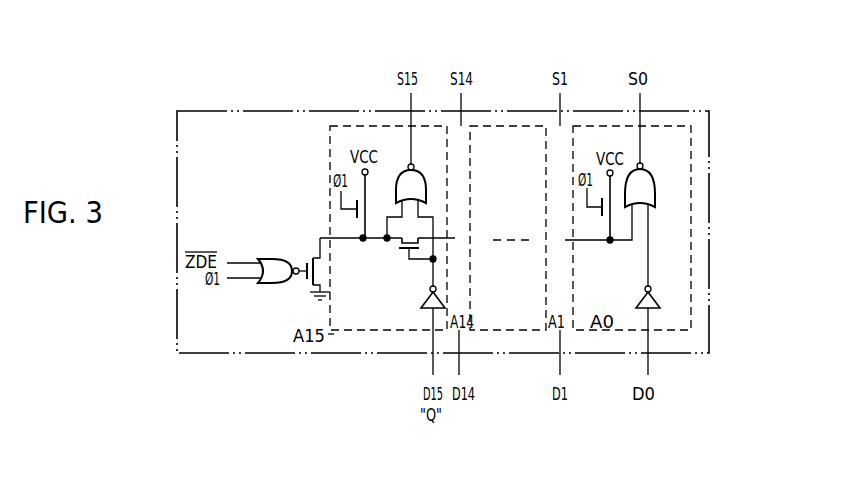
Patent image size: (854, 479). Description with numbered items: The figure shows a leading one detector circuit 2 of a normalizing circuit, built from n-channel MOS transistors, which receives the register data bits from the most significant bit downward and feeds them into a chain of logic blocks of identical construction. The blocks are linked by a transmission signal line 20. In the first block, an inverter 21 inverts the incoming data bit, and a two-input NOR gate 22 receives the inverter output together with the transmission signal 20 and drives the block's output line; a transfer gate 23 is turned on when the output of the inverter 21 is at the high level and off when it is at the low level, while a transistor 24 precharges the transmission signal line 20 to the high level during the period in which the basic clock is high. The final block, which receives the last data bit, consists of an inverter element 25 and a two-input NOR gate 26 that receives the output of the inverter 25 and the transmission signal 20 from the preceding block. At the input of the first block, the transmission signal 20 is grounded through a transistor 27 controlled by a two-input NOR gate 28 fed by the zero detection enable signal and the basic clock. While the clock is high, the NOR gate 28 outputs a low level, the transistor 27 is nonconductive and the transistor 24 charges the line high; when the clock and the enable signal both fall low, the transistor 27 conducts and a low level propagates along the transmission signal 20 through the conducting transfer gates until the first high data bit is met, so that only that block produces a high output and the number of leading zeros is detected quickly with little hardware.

The leading "1" detector circuit 2 is at (709, 190).
The transmission signal line 20 is at (352, 242).
The inverter 21 is at (421, 303).
The two-input NOR gate 22 is at (396, 197).
The transfer gate 23 is at (405, 251).
The transistor 24 is at (356, 211).
The inverter element 25 is at (636, 300).
The two-input NOR gate 26 is at (648, 193).
The transistor 27 is at (306, 281).
The two-input NOR gate 28 is at (265, 283).